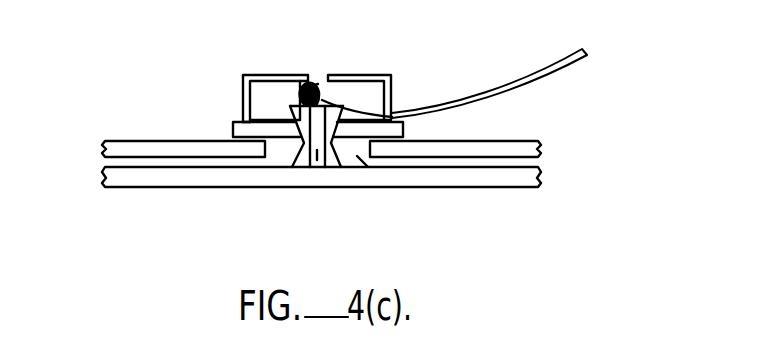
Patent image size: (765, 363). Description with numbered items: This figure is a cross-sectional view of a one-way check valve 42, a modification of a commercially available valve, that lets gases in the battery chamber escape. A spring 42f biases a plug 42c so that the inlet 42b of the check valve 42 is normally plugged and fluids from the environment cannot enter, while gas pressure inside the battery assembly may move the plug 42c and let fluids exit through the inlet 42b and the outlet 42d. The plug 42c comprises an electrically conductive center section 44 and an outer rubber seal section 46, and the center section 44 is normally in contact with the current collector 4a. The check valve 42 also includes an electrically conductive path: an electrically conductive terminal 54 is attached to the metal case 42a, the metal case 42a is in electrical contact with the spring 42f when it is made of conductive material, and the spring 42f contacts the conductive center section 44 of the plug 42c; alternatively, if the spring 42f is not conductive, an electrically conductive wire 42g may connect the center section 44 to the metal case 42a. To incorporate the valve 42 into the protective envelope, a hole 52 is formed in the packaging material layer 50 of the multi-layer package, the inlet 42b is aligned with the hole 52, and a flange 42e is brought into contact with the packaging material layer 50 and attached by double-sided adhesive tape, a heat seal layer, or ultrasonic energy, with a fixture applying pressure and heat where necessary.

The check valve 42 is at (274, 75).
The metal case 42a is at (377, 76).
The inlet 42b is at (297, 167).
The plug 42c is at (245, 120).
The outlet 42d is at (318, 82).
The flange 42e is at (232, 129).
The spring 42f is at (321, 82).
The wire 42g is at (403, 130).
The center section 44 is at (314, 168).
The outer rubber seal section 46 is at (341, 167).
The packaging material layer 50 is at (540, 148).
The hole 52 is at (358, 156).
The terminal 54 is at (548, 65).
The current collector 4a is at (173, 178).